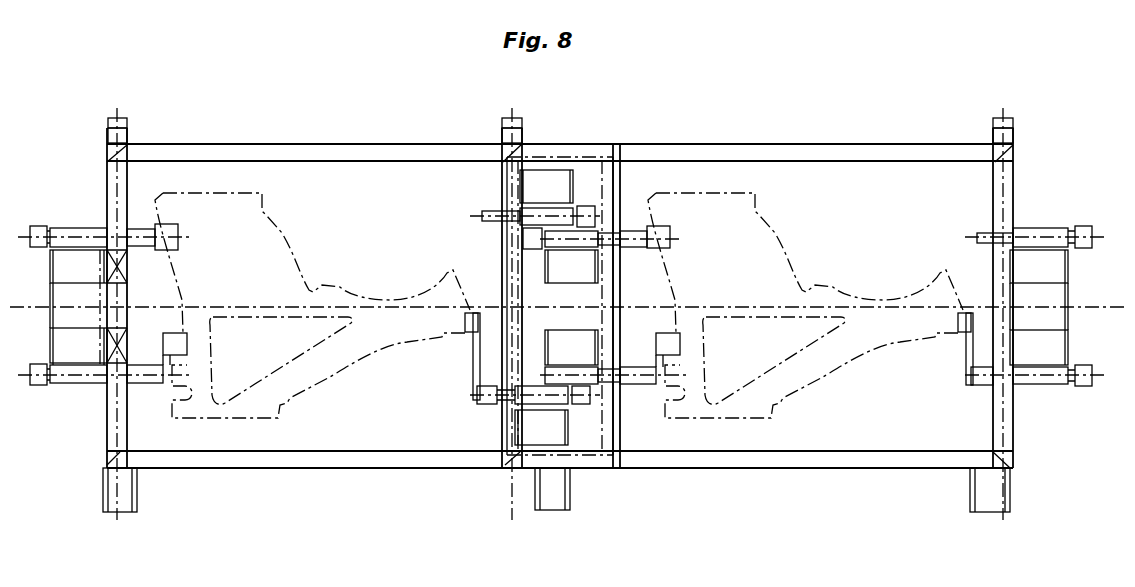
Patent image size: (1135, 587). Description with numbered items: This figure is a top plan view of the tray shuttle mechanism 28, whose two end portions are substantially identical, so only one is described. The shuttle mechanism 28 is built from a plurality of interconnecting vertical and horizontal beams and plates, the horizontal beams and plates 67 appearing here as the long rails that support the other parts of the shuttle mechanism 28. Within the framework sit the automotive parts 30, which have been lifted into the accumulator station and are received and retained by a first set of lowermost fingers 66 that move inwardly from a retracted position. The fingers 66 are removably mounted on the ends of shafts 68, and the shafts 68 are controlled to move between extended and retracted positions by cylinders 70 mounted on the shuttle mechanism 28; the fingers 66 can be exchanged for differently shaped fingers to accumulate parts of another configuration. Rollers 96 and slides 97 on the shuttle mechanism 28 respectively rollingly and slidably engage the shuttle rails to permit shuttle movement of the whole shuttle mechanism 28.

The tray shuttle mechanism 28 is at (775, 472).
The automotive parts 30 is at (292, 253).
The lowermost fingers 66 is at (178, 333).
The horizontal beams and plates 67 is at (760, 150).
The shafts 68 is at (110, 265).
The cylinders 70 is at (73, 367).
The rollers 96 is at (128, 122).
The slides 97 is at (137, 505).